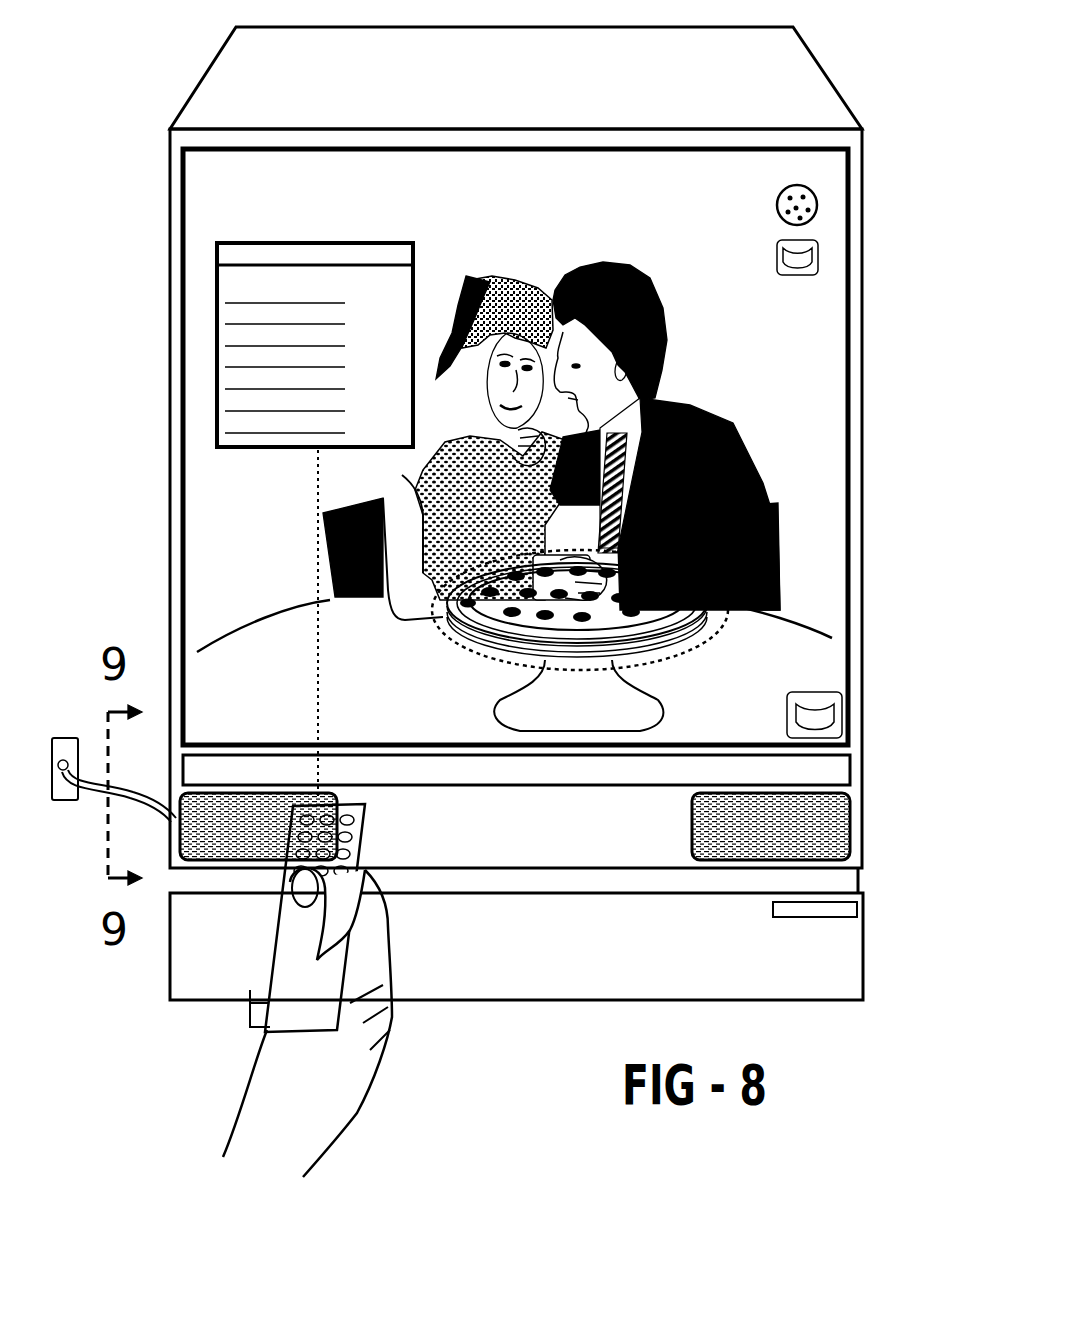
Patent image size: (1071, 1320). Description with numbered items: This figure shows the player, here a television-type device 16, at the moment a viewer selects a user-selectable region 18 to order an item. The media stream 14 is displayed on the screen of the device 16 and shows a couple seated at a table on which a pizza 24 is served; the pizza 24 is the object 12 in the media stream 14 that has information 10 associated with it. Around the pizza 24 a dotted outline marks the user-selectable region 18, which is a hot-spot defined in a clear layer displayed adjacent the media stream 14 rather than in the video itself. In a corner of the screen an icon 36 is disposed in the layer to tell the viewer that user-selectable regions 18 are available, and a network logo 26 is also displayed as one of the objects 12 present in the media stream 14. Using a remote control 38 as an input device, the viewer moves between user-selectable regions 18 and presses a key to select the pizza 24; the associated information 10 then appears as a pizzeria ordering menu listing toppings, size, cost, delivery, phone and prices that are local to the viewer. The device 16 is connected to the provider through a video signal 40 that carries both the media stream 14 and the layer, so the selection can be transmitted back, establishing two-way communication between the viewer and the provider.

The information 10 is at (358, 258).
The object 12 is at (727, 424).
The media stream 14 is at (862, 357).
The device 16 is at (805, 78).
The user-selectable region 18 is at (707, 649).
The pizza 24 is at (660, 633).
The network logo 26 is at (790, 712).
The icon 36 is at (815, 256).
The remote control 38 is at (263, 985).
The video signal 40 is at (133, 805).